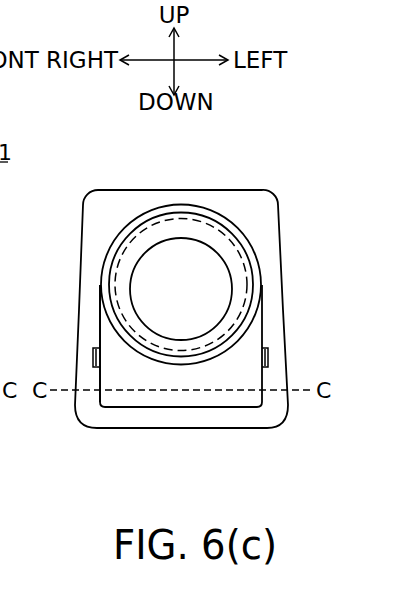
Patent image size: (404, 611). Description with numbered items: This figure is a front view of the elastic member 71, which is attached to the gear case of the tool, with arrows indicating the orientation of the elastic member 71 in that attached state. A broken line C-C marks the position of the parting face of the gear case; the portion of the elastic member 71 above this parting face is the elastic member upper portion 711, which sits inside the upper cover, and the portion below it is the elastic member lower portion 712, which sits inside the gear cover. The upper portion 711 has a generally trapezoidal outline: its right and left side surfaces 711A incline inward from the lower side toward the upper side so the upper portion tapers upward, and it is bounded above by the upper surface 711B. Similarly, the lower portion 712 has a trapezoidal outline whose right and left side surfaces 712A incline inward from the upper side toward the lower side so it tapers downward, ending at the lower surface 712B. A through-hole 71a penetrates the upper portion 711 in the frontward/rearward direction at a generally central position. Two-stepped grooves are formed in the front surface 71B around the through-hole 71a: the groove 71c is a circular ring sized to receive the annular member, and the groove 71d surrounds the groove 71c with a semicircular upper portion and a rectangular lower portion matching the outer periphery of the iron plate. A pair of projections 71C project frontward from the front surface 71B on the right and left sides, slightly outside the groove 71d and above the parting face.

The elastic member 71 is at (280, 177).
The elastic member upper portion 711 is at (238, 190).
The right and left side surfaces of the elastic member upper portion 711A is at (82, 225).
The upper surface 711B is at (117, 190).
The elastic member lower portion 712 is at (235, 418).
The right and left side surfaces of the elastic member lower portion 712A is at (82, 417).
The lower surface 712B is at (155, 428).
The front surface 71B is at (87, 297).
The projections 71C is at (93, 357).
The through-hole 71a is at (205, 260).
The groove 71c is at (240, 291).
The groove 71d is at (252, 322).